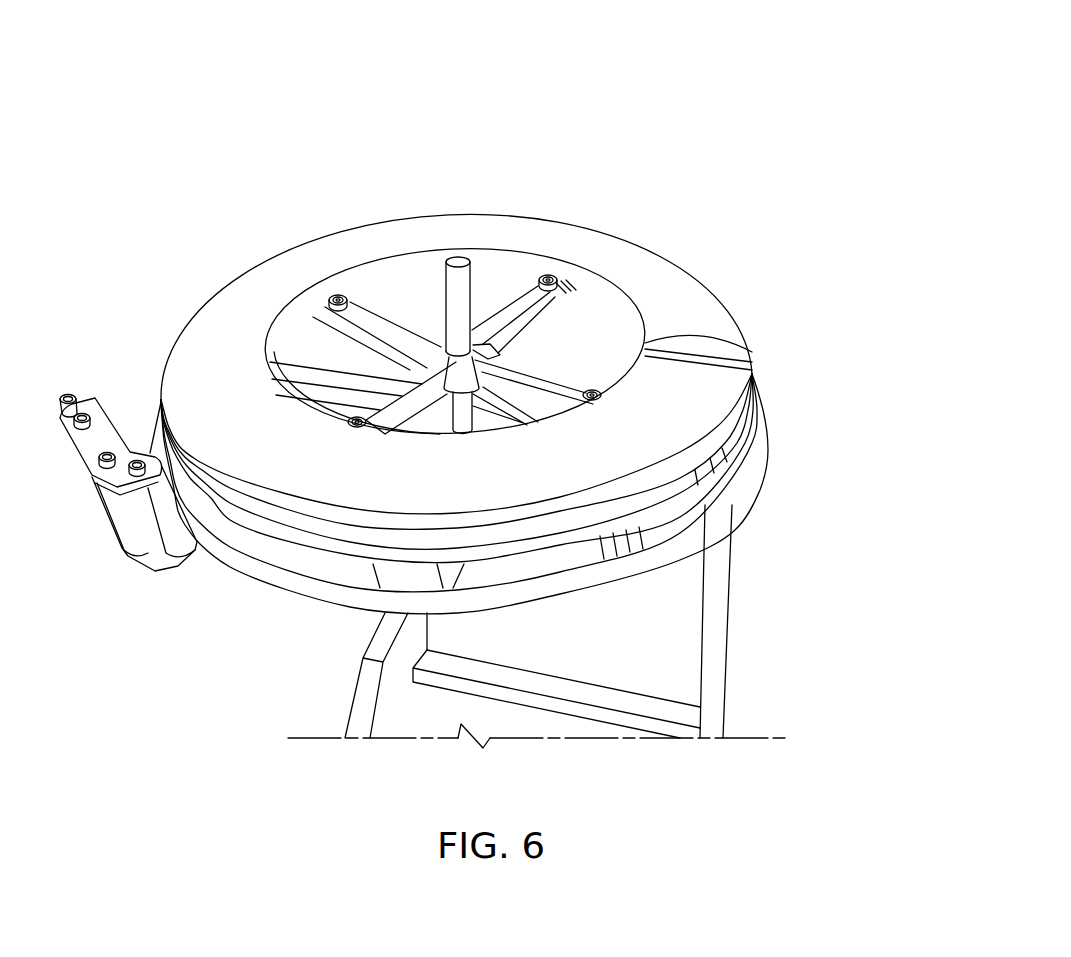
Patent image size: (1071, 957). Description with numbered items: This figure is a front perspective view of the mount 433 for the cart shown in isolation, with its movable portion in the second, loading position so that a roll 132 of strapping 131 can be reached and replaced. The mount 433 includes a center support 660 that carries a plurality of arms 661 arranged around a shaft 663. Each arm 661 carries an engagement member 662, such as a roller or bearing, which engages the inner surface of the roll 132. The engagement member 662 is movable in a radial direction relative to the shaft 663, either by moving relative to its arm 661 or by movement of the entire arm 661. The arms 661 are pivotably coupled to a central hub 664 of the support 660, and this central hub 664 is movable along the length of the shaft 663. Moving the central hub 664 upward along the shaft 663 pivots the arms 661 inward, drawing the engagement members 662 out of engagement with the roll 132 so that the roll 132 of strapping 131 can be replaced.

The mount 433 is at (669, 118).
The strapping 131 is at (215, 306).
The roll 132 is at (303, 238).
The center support 660 is at (568, 363).
The arm 661 is at (472, 333).
The engagement member 662 is at (545, 278).
The shaft 663 is at (600, 405).
The central hub 664 is at (460, 372).